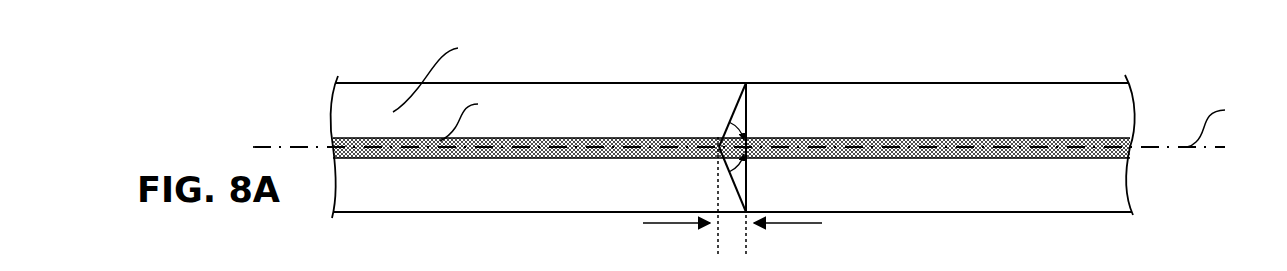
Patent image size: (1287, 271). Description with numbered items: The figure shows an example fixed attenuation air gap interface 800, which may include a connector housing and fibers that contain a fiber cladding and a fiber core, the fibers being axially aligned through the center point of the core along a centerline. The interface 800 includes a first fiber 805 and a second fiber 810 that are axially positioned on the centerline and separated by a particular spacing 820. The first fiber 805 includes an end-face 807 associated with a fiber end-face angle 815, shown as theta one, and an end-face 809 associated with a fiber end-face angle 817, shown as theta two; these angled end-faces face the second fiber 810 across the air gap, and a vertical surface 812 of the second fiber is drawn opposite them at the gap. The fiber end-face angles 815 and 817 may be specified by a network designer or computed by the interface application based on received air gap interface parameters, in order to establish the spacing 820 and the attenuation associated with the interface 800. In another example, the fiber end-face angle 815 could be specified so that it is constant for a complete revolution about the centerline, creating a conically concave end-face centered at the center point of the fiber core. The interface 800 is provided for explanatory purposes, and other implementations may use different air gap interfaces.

The air gap interface 800 is at (242, 61).
The first fiber 805 is at (434, 147).
The second fiber 810 is at (1040, 145).
The end-face 807 is at (742, 92).
The end-face 809 is at (742, 203).
The perpendicular end face 812 is at (748, 108).
The fiber end-face angle 815 is at (733, 113).
The fiber end-face angle 817 is at (733, 180).
The spacing 820 is at (732, 200).